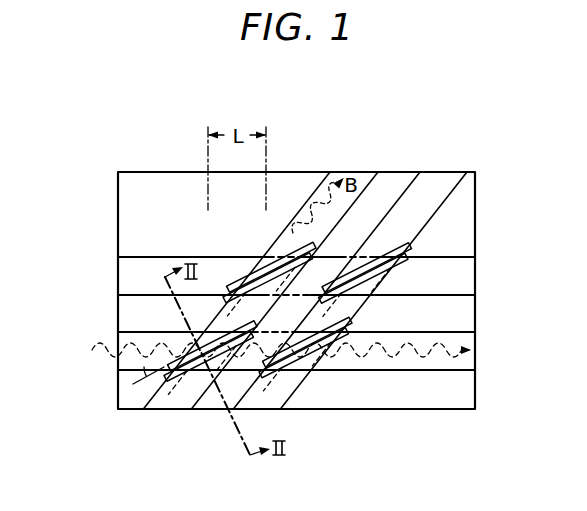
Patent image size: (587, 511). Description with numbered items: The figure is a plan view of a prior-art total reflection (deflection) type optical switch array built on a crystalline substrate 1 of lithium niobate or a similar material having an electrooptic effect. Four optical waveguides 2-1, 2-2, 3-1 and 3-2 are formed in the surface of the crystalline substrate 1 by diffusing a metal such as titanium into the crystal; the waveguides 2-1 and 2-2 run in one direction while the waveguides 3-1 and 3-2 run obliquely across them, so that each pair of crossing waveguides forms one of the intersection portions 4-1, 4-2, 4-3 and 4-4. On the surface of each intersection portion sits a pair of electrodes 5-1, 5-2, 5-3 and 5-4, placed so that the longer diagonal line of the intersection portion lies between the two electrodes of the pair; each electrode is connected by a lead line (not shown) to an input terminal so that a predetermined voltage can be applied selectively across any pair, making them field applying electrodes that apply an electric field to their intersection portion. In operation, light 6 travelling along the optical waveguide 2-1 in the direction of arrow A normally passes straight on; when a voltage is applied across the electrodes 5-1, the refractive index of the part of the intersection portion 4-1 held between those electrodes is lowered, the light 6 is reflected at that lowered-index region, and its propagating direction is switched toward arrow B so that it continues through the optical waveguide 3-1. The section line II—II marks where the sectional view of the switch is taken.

The crystalline substrate 1 is at (118, 211).
The optical waveguide 2-1 is at (118, 368).
The optical waveguide 2-2 is at (118, 277).
The optical waveguide 3-1 is at (365, 172).
The optical waveguide 3-2 is at (442, 172).
The intersection portion 4-1 is at (204, 334).
The intersection portion 4-2 is at (315, 366).
The intersection portion 4-3 is at (263, 258).
The intersection portion 4-4 is at (368, 294).
The pair of electrodes 5-1 is at (175, 386).
The pair of electrodes 5-2 is at (272, 376).
The pair of electrodes 5-3 is at (229, 284).
The pair of electrodes 5-4 is at (404, 262).
The light 6 is at (284, 347).